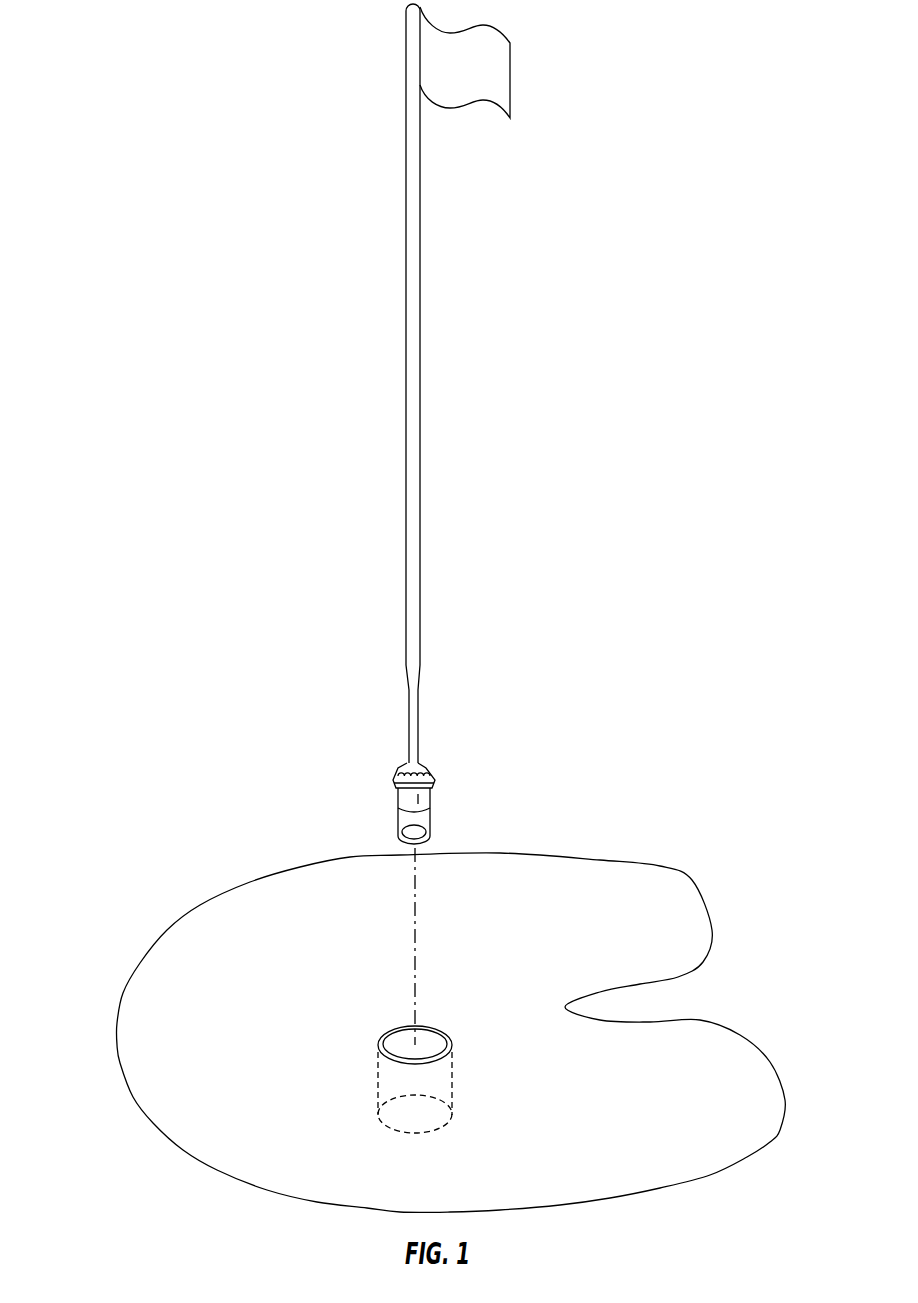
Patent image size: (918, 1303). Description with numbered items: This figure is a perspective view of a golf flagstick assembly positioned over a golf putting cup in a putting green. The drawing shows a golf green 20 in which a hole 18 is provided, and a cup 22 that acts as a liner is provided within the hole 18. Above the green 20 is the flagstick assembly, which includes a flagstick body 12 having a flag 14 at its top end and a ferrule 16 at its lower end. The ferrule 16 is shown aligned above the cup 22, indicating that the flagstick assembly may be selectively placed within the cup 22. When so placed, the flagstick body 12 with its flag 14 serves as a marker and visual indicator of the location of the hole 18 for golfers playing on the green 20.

The flagstick body 12 is at (410, 432).
The flag 14 is at (498, 63).
The ferrule 16 is at (424, 817).
The hole 18 is at (446, 1032).
The golf green 20 is at (688, 898).
The cup 22 is at (390, 1050).